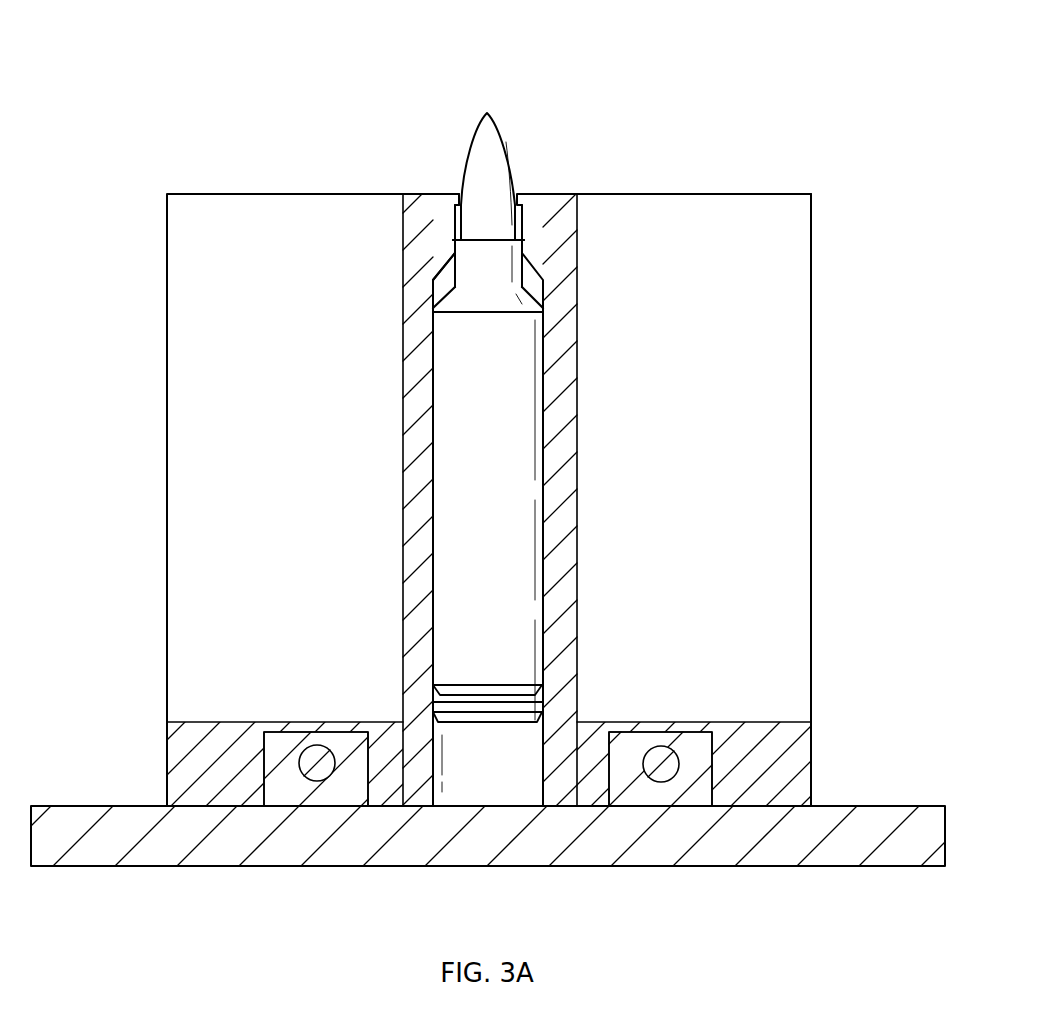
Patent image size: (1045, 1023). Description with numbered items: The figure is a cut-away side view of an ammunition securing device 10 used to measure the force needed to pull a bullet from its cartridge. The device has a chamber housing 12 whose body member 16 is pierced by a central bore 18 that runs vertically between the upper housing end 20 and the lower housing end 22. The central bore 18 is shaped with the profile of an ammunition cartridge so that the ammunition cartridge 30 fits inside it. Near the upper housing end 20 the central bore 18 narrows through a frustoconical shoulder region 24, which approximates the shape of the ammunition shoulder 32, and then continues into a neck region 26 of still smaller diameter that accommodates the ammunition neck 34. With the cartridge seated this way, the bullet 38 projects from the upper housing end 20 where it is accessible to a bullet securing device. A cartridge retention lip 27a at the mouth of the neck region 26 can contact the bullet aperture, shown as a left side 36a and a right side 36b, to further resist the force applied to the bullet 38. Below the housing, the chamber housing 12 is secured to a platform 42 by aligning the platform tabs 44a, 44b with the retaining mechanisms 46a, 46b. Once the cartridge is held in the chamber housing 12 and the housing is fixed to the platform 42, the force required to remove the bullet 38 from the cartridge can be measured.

The ammunition securing device 10 is at (270, 66).
The chamber housing 12 is at (838, 310).
The body member 16 is at (819, 480).
The central bore 18 is at (545, 798).
The upper housing end 20 is at (676, 193).
The lower housing end 22 is at (757, 806).
The shoulder region 24 is at (443, 282).
The neck region 26 is at (525, 218).
The cartridge retention lip 27a is at (458, 195).
The ammunition cartridge 30 is at (488, 667).
The ammunition shoulder 32 is at (527, 289).
The ammunition neck 34 is at (489, 272).
The bullet aperture 36a is at (453, 232).
The bullet aperture 36b is at (523, 232).
The bullet 38 is at (487, 113).
The platform 42 is at (883, 858).
The platform tab 44a is at (690, 747).
The platform tab 44b is at (279, 748).
The retaining mechanism 46a is at (650, 758).
The retaining mechanism 46b is at (320, 758).